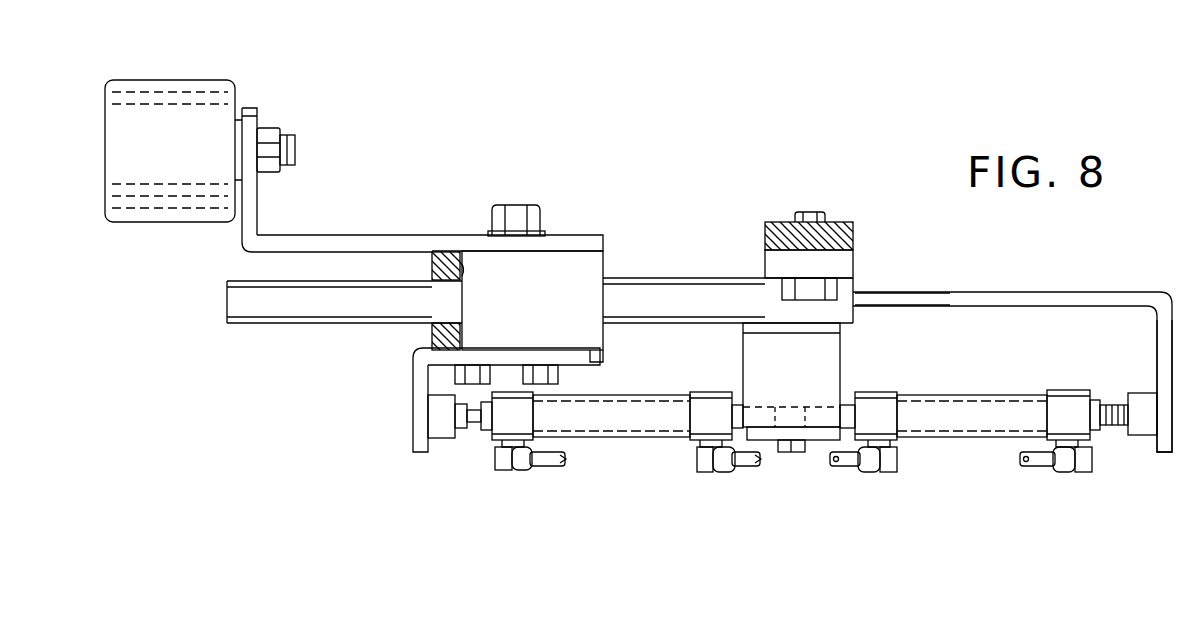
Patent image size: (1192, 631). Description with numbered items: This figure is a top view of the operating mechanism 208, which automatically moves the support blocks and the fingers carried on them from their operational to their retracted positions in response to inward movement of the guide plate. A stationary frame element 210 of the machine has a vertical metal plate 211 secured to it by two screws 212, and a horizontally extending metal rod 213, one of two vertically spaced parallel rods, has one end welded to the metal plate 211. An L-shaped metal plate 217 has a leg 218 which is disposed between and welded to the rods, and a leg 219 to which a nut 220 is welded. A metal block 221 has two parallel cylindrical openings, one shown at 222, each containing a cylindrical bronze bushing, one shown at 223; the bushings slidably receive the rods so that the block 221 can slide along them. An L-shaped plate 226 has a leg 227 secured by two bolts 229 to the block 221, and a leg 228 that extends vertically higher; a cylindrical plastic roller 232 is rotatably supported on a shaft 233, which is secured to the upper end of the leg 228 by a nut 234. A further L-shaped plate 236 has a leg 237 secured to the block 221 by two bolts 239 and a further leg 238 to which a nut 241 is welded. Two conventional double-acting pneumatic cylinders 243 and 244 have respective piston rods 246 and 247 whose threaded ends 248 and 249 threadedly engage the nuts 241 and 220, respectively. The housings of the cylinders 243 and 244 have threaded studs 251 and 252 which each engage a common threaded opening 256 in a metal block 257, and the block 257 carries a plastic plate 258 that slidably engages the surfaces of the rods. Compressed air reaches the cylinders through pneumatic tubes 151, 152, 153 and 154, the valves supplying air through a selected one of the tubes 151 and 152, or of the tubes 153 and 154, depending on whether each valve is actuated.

The mechanism 208 is at (268, 452).
The stationary frame element 210 is at (837, 232).
The vertical metal plate 211 is at (848, 262).
The screws 212 is at (807, 212).
The metal rod 213 is at (268, 302).
The L-shaped metal plate 217 is at (1005, 297).
The leg 218 is at (888, 302).
The leg 219 is at (1160, 333).
The nut 220 is at (1142, 397).
The metal block 221 is at (585, 267).
The cylindrical opening 222 is at (448, 289).
The cylindrical bronze bushing 223 is at (423, 333).
The L-shaped plate 226 is at (342, 243).
The leg 227 is at (460, 236).
The leg 228 is at (254, 198).
The bolts 229 is at (517, 212).
The cylindrical plastic roller 232 is at (188, 98).
The shaft 233 is at (296, 148).
The nut 234 is at (270, 137).
The further L-shaped plate 236 is at (412, 367).
The leg 237 is at (605, 360).
The further leg 238 is at (422, 415).
The bolts 239 is at (558, 374).
The nut 241 is at (438, 430).
The double-acting pneumatic cylinder 243 is at (618, 417).
The double-acting pneumatic cylinder 244 is at (968, 418).
The piston rod 246 is at (476, 428).
The piston rod 247 is at (1107, 426).
The threaded end 248 is at (462, 428).
The threaded end 249 is at (1118, 428).
The threaded stud 251 is at (740, 420).
The threaded stud 252 is at (846, 428).
The common threaded opening 256 is at (828, 410).
The metal block 257 is at (763, 357).
The plastic plate 258 is at (838, 333).
The pneumatic tube 151 is at (545, 462).
The pneumatic tube 152 is at (737, 464).
The pneumatic tube 153 is at (850, 468).
The pneumatic tube 154 is at (1033, 464).